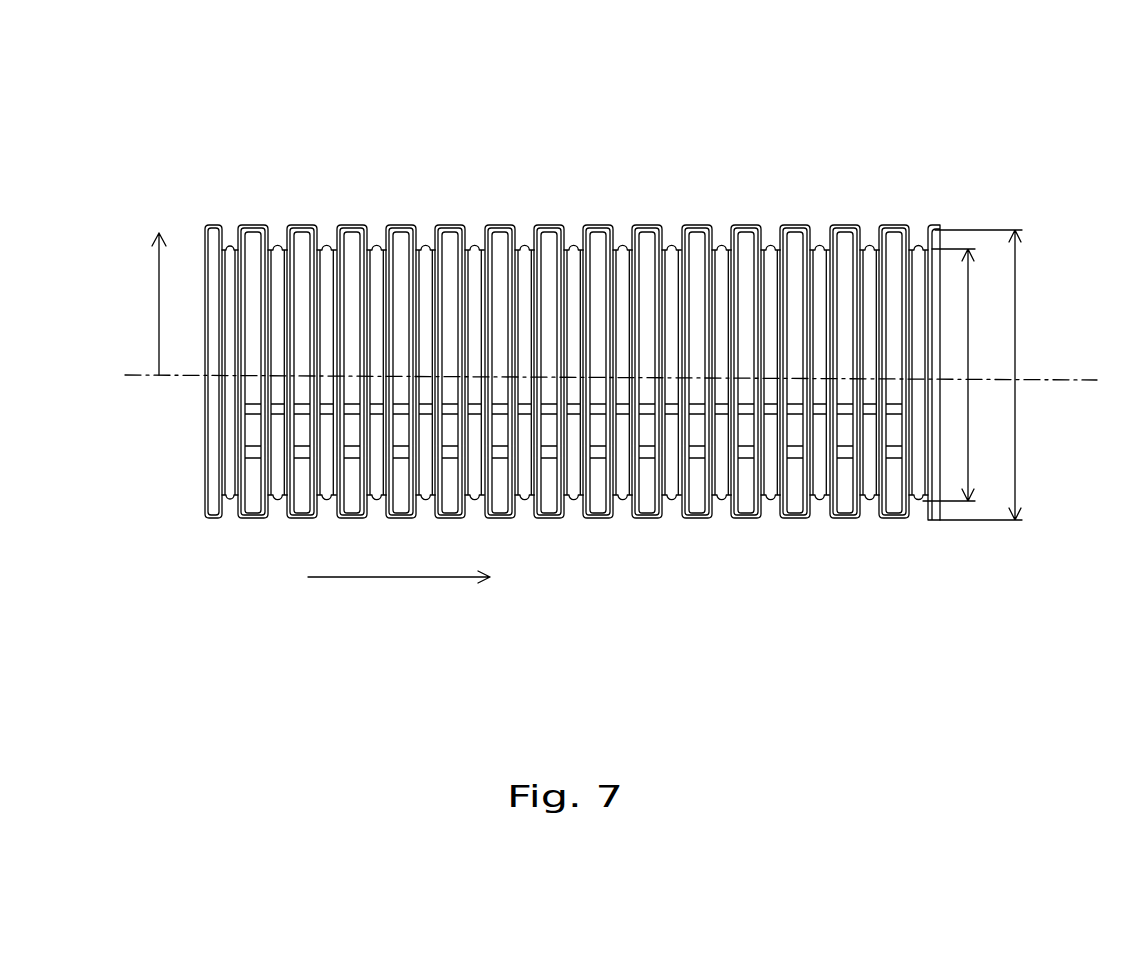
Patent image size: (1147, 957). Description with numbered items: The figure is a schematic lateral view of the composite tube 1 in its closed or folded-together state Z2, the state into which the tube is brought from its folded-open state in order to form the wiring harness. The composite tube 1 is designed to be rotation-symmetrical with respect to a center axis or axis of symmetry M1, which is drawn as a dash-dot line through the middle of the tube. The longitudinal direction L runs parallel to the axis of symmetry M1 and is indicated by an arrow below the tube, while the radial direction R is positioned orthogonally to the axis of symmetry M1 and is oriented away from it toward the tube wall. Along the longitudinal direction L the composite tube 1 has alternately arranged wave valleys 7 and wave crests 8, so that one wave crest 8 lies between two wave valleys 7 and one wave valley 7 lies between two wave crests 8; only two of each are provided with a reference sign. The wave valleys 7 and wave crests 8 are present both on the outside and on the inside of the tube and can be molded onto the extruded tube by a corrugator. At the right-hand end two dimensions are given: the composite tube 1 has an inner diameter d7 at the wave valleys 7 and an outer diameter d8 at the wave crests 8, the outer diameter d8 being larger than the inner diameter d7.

The composite tube 1 is at (574, 263).
The wave valleys 7 is at (868, 242).
The wave crests 8 is at (843, 226).
The axis of symmetry M1 is at (1080, 380).
The inner diameter d7 is at (961, 375).
The outer diameter d8 is at (991, 375).
The radial direction R is at (149, 304).
The longitudinal direction L is at (399, 593).
The closed or folded-together state Z2 is at (251, 549).